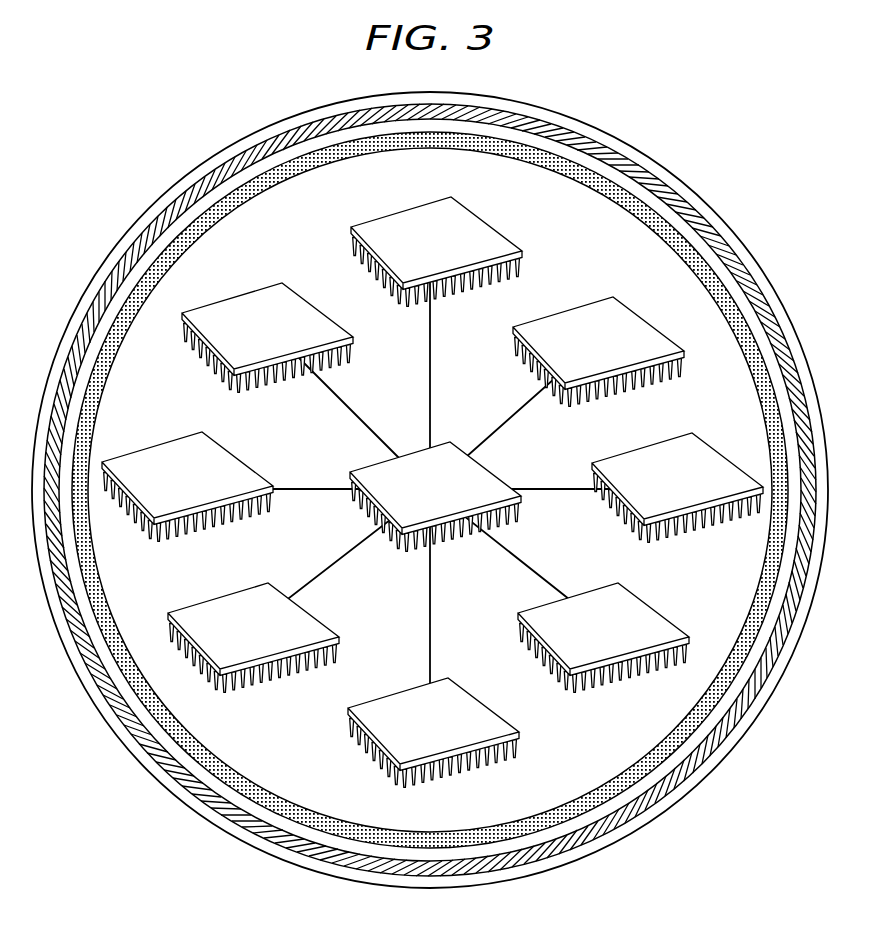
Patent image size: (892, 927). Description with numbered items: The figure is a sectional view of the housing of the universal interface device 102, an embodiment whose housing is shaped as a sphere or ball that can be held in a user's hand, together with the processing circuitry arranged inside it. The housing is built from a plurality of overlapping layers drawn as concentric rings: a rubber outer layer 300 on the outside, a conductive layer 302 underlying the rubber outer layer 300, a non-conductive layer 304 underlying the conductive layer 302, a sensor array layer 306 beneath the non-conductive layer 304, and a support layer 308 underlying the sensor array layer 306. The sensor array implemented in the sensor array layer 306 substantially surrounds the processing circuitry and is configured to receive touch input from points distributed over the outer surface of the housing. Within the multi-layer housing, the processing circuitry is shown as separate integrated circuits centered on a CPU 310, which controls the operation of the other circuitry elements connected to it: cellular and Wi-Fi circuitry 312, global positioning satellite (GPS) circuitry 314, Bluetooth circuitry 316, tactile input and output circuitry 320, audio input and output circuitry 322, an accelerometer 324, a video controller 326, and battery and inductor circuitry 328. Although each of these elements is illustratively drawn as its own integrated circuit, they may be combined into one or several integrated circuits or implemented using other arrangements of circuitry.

The universal interface device 102 is at (147, 145).
The rubber outer layer 300 is at (110, 262).
The conductive layer 302 is at (212, 793).
The non-conductive layer 304 is at (588, 160).
The sensor array layer 306 is at (670, 227).
The support layer 308 is at (605, 767).
The CPU 310 is at (500, 467).
The cellular and Wi-Fi circuitry 312 is at (473, 213).
The global positioning satellite (GPS) circuitry 314 is at (698, 437).
The Bluetooth circuitry 316 is at (202, 600).
The tactile input and output circuitry 320 is at (257, 290).
The audio input and output circuitry 322 is at (637, 315).
The accelerometer 324 is at (180, 433).
The video controller 326 is at (348, 712).
The battery and inductor circuitry 328 is at (658, 610).